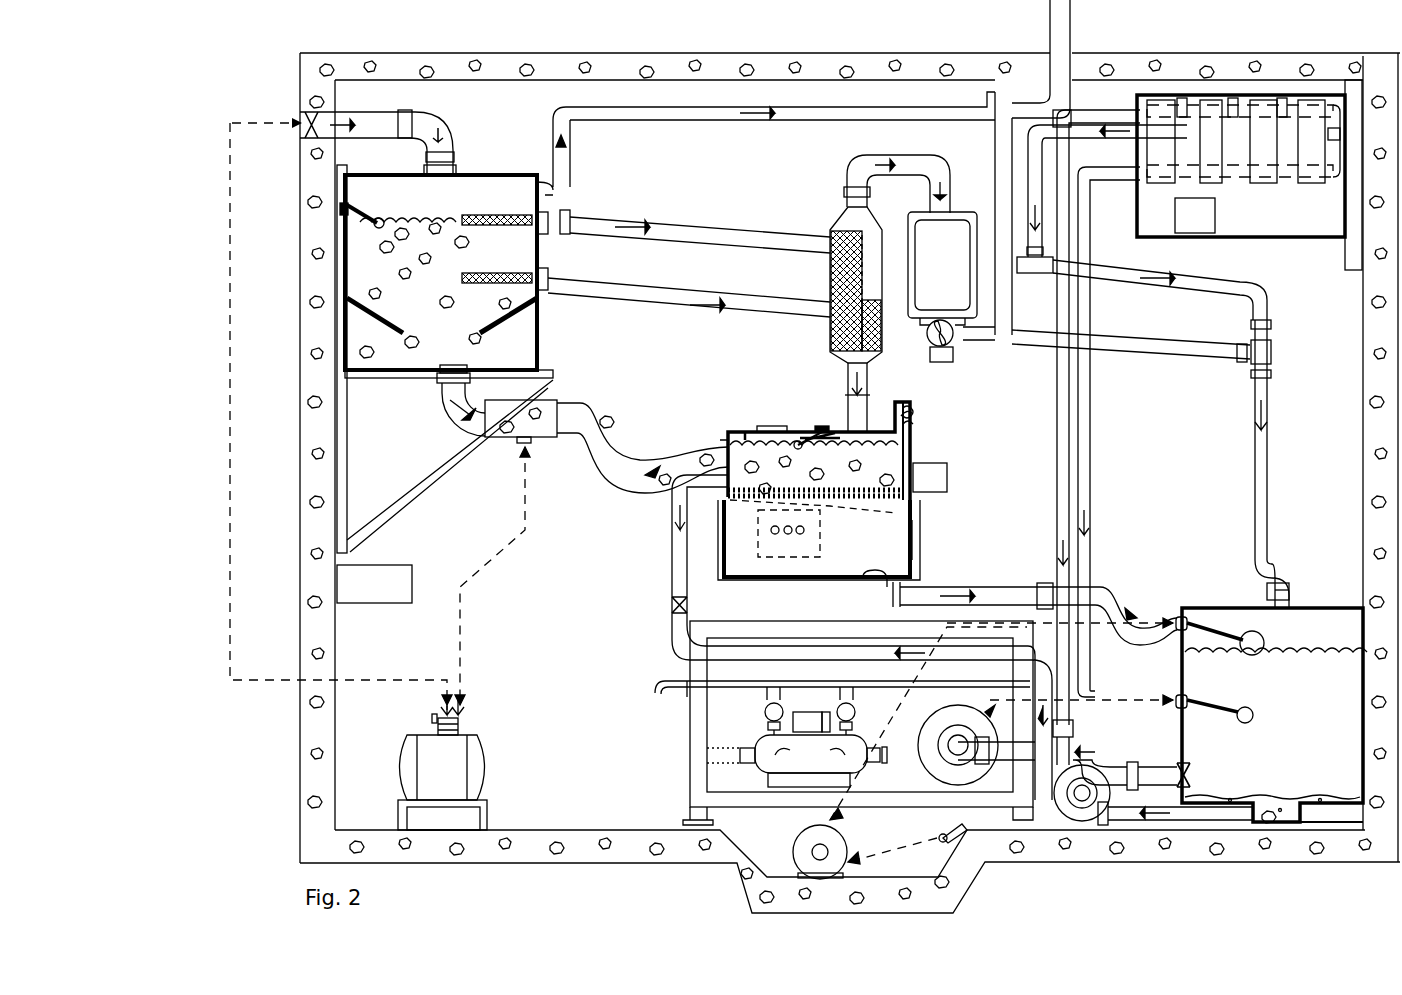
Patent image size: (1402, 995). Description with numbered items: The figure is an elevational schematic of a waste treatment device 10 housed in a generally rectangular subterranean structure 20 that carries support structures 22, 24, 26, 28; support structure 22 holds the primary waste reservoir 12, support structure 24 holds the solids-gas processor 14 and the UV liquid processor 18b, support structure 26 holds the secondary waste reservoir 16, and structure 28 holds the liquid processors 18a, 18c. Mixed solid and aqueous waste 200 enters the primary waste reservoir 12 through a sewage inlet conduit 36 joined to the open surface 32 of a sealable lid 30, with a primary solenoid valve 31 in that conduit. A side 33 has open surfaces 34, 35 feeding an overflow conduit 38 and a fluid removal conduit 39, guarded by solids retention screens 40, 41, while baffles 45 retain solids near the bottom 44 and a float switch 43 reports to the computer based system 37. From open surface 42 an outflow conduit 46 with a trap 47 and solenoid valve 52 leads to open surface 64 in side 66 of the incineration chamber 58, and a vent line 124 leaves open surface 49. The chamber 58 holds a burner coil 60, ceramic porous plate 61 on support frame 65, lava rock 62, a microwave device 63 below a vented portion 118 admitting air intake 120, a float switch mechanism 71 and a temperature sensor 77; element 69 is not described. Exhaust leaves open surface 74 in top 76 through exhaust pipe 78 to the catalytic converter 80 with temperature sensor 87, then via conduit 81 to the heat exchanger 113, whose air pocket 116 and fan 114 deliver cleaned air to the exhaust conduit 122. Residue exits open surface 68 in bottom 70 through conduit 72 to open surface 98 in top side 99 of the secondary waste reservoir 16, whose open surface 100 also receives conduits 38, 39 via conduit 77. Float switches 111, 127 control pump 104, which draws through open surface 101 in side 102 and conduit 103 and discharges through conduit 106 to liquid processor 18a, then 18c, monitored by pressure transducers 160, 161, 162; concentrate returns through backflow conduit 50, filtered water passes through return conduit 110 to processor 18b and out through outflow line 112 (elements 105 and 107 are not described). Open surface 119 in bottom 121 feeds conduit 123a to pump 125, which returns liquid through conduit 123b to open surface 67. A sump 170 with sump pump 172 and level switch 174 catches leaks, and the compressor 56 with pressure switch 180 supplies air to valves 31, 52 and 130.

The waste treatment device 10 is at (275, 59).
The subterranean structure 20 is at (850, 483).
The support structure 22 is at (373, 425).
The support structure 24 is at (690, 753).
The support structure 26 is at (1365, 828).
The support structure 28 is at (1362, 300).
The sealable lid 30 is at (373, 173).
The primary solenoid valve 31 is at (320, 122).
The open surface 32 is at (395, 138).
The side 33 is at (548, 252).
The open surface 34 is at (540, 228).
The open surface 35 is at (548, 278).
The sewage inlet conduit 36 is at (448, 118).
The computer based system 37 is at (374, 584).
The overflow conduit 38 is at (620, 216).
The fluid removal conduit 39 is at (645, 288).
The solids retention screen 40 is at (467, 207).
The solids retention screen 41 is at (440, 278).
The open surface 42 is at (432, 383).
The float switch 43 is at (395, 232).
The bottom 44 is at (433, 373).
The baffles 45 is at (395, 330).
The outflow conduit 46 is at (455, 420).
The trap 47 is at (600, 475).
The open surface 49 is at (552, 187).
The backflow conduit 50 is at (1073, 113).
The solenoid valve 52 is at (498, 438).
The compressor 56 is at (425, 745).
The incineration chamber 58 is at (770, 428).
The burner coil 60 is at (760, 527).
The ceramic porous plate 61 is at (903, 495).
The lava rock 62 is at (763, 583).
The microwave device 63 is at (947, 470).
The open surface 64 is at (728, 440).
The support frame 65 is at (807, 503).
The side 66 is at (723, 507).
The open surface 67 is at (718, 486).
The open surface 68 is at (870, 577).
The side wall 69 is at (914, 557).
The bottom 70 is at (800, 578).
The float switch mechanism 71 is at (800, 430).
The conduit 72 is at (960, 587).
The open surface 74 is at (853, 420).
The top 76 is at (755, 430).
The temperature sensor / conduit 77 is at (748, 432).
The exhaust pipe 78 is at (848, 395).
The catalytic converter 80 is at (830, 232).
The conduit 81 is at (846, 168).
The temperature sensor 87 is at (830, 290).
The open surface 98 is at (1290, 605).
The top side 99 is at (1212, 607).
The open surface 100 is at (1247, 606).
The open surface 101 is at (1180, 770).
The side 102 is at (1180, 683).
The conduit 103 is at (1000, 795).
The pump 104 is at (920, 768).
The valve 105 is at (1192, 775).
The conduit 106 is at (1067, 508).
The control box 107 is at (1193, 233).
The return conduit 110 is at (1118, 285).
The float switch 111 is at (1258, 654).
The outflow line 112 is at (745, 684).
The heat exchanger 113 is at (1005, 333).
The fan 114 is at (968, 358).
The air pocket 116 is at (955, 235).
The vented portion 118 is at (913, 410).
The open surface 119 is at (1265, 812).
The air intake 120 is at (945, 475).
The bottom 121 is at (1305, 815).
The exhaust conduit 122 is at (1048, 62).
The conduit 123a is at (1130, 820).
The conduit 123b is at (672, 645).
The vent line 124 is at (622, 107).
The pump 125 is at (1068, 815).
The float switch 127 is at (1252, 722).
The valve 130 is at (670, 606).
The pressure transducer 160 is at (1232, 104).
The pressure transducer 161 is at (1280, 104).
The pressure transducer 162 is at (1362, 88).
The sump 170 is at (740, 858).
The sump pump 172 is at (846, 848).
The internal level switch 174 is at (962, 842).
The pressure switch 180 is at (468, 722).
The mixed solid and aqueous waste 200 is at (355, 305).
The solids-gas processor 14 is at (780, 432).
The secondary waste reservoir 16 is at (1343, 608).
The primary waste reservoir 12 is at (603, 183).
The liquid processor 18a is at (1183, 185).
The liquid processor 18b is at (765, 755).
The liquid processor 18c is at (1353, 150).